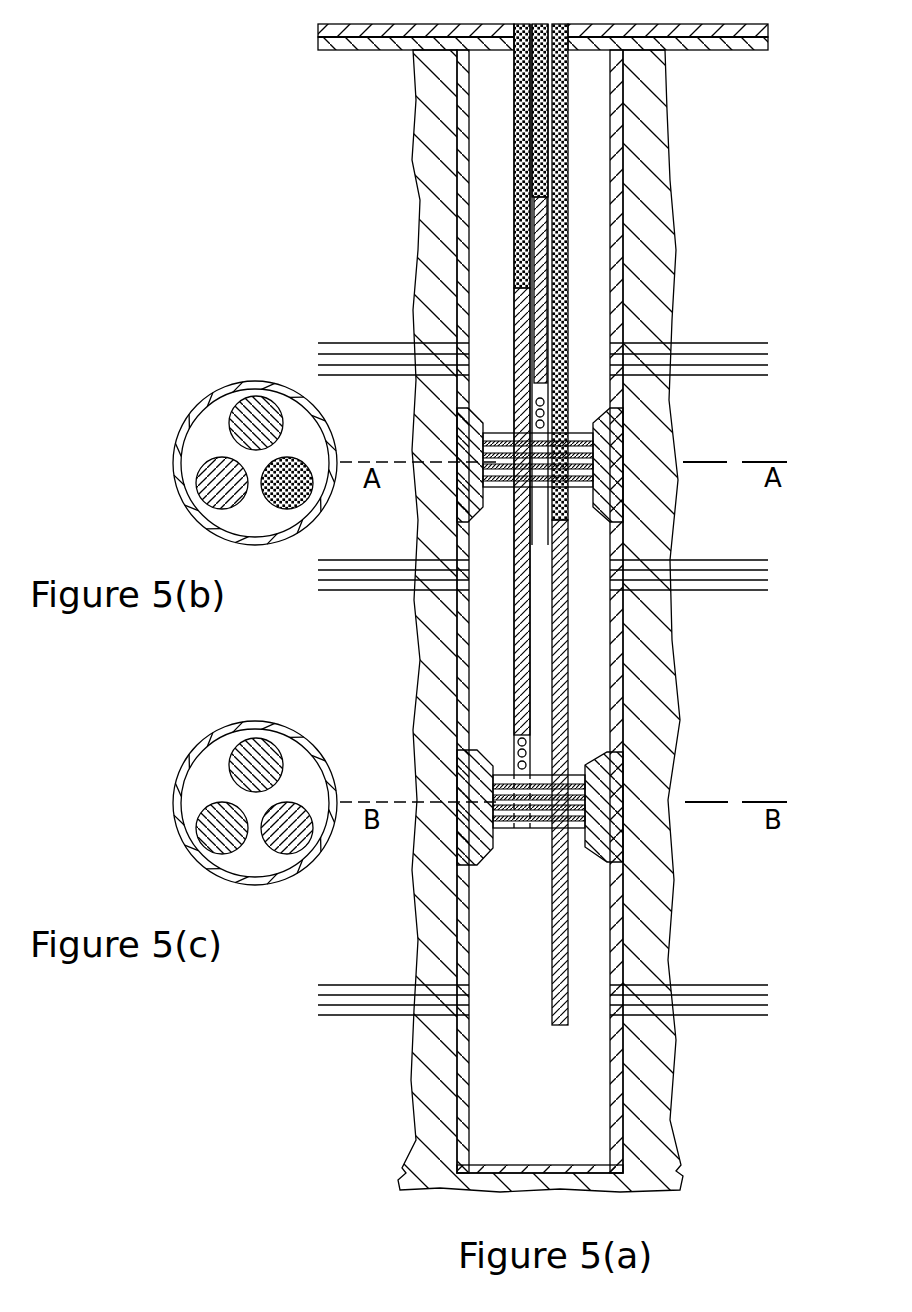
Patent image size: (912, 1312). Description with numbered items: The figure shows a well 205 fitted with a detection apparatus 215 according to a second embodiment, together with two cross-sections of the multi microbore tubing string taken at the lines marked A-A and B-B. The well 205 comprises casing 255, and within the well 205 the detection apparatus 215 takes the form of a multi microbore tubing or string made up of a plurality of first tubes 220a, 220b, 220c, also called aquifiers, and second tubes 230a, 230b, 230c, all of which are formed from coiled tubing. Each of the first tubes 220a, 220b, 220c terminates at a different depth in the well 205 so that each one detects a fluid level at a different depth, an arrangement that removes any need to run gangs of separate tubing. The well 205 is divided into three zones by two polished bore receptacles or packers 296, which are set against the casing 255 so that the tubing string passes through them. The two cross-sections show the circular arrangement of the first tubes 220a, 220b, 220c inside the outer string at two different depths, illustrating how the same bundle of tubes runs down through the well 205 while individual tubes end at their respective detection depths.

In FIG. 5A, the well 205 is at (712, 221).
In FIG. 5A, the detection apparatus 215 is at (545, 278).
In FIG. 5A, the first tube 220a is at (505, 320).
In FIG. 5B, the first tube 220a is at (221, 490).
In FIG. 5C, the first tube 220a is at (221, 833).
In FIG. 5A, the first tube 220b is at (543, 383).
In FIG. 5B, the first tube 220b is at (256, 402).
In FIG. 5C, the first tube 220b is at (247, 753).
In FIG. 5A, the first tube 220c is at (558, 655).
In FIG. 5B, the first tube 220c is at (281, 483).
In FIG. 5C, the first tube 220c is at (281, 833).
In FIG. 5A, the second tube 230a is at (522, 100).
In FIG. 5A, the second tube 230b is at (543, 117).
In FIG. 5A, the second tube 230c is at (560, 138).
In FIG. 5A, the casing 255 is at (617, 316).
In FIG. 5A, the packer 296 is at (613, 488).